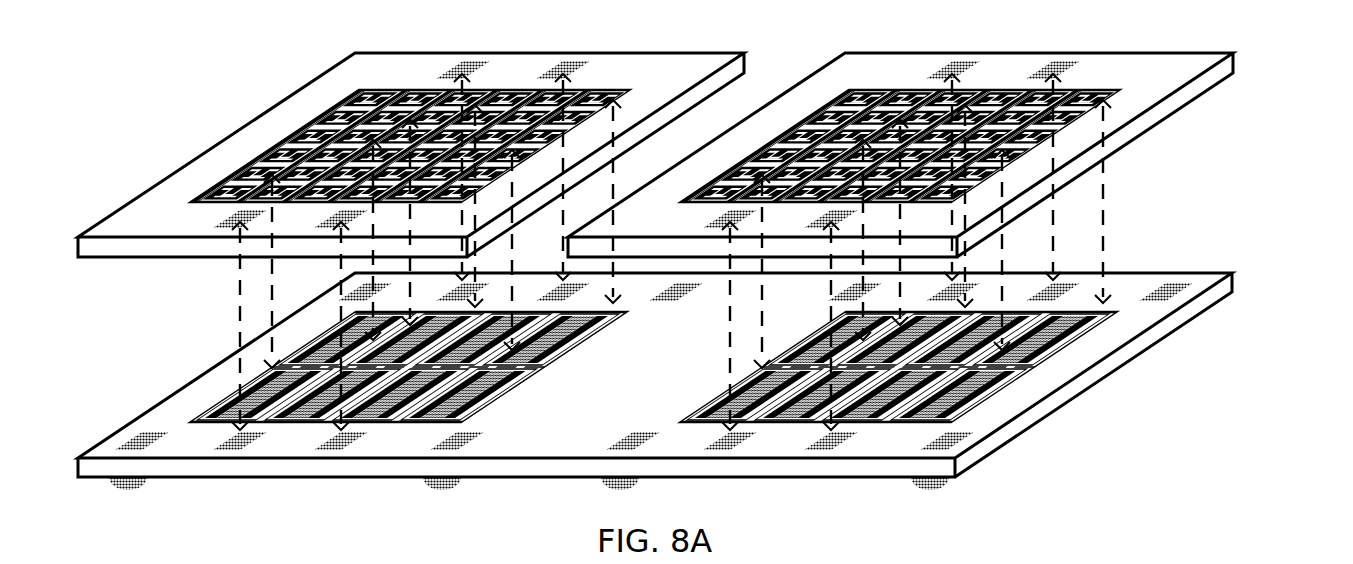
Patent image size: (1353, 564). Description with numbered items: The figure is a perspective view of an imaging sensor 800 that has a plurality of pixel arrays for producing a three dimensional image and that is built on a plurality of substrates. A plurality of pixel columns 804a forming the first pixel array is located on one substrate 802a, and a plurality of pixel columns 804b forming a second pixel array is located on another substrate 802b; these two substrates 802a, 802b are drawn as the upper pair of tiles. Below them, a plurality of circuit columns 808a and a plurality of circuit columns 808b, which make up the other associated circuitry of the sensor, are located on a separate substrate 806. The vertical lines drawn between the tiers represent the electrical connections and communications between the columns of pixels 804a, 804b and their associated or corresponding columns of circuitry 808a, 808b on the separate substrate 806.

The imaging sensor 800 is at (1163, 195).
The substrate 802a is at (1203, 92).
The substrate 802b is at (262, 137).
The pixel columns 804a is at (1072, 103).
The pixel columns 804b is at (573, 61).
The separate substrate 806 is at (1032, 413).
The circuit columns 808a is at (1107, 323).
The circuit columns 808b is at (220, 397).